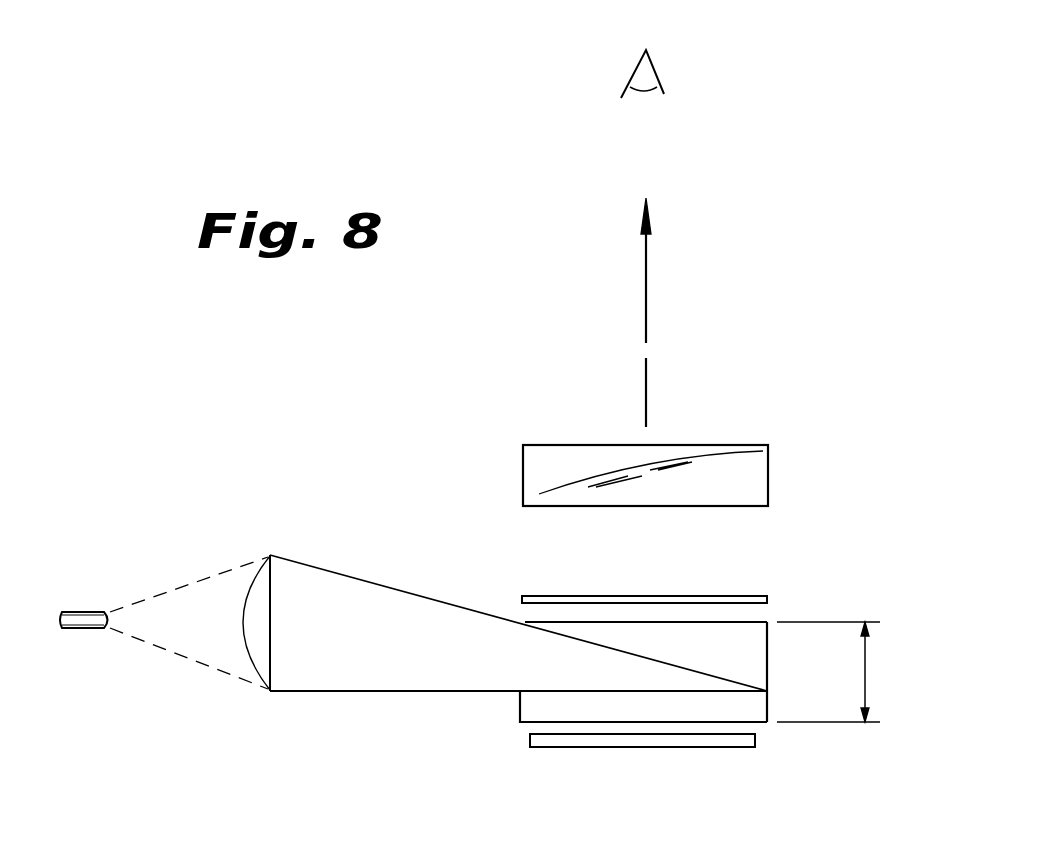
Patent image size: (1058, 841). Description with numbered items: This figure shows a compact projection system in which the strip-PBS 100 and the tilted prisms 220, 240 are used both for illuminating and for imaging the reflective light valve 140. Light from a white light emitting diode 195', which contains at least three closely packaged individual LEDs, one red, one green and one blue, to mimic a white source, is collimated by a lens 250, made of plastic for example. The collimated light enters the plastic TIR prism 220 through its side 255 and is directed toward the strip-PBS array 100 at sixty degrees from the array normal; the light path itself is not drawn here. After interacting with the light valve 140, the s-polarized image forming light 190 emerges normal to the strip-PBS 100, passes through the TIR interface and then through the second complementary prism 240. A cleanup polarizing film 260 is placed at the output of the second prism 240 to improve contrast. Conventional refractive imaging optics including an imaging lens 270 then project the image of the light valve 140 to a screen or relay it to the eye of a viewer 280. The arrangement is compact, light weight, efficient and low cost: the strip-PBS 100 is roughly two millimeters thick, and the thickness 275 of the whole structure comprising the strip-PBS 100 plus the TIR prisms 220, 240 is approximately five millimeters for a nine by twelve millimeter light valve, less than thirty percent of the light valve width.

The eye of a viewer 280 is at (688, 70).
The s-polarized image forming light 190 is at (659, 315).
The imaging lens 270 is at (762, 468).
The cleanup polarizing film 260 is at (745, 600).
The second complementary prism 240 is at (735, 648).
The strip-PBS 100 is at (520, 703).
The reflective light valve 140 is at (560, 740).
The thickness 275 is at (885, 655).
The side 255 is at (272, 592).
The TIR prism 220 is at (408, 586).
The lens 250 is at (258, 652).
The white light emitting diode 195' is at (164, 606).